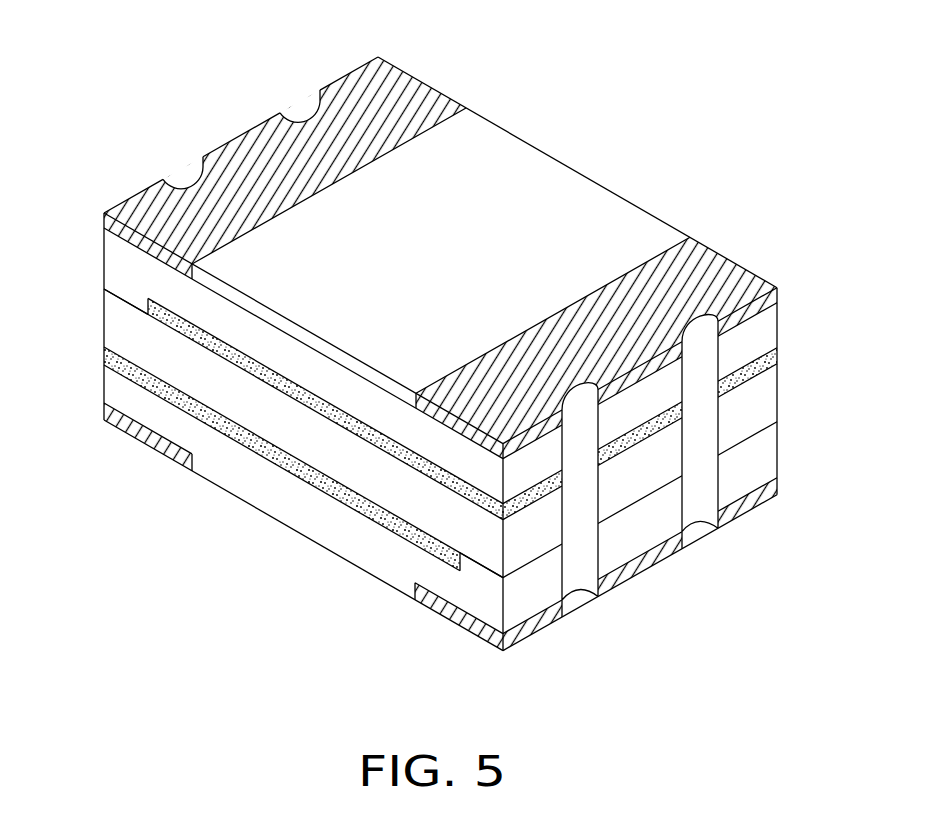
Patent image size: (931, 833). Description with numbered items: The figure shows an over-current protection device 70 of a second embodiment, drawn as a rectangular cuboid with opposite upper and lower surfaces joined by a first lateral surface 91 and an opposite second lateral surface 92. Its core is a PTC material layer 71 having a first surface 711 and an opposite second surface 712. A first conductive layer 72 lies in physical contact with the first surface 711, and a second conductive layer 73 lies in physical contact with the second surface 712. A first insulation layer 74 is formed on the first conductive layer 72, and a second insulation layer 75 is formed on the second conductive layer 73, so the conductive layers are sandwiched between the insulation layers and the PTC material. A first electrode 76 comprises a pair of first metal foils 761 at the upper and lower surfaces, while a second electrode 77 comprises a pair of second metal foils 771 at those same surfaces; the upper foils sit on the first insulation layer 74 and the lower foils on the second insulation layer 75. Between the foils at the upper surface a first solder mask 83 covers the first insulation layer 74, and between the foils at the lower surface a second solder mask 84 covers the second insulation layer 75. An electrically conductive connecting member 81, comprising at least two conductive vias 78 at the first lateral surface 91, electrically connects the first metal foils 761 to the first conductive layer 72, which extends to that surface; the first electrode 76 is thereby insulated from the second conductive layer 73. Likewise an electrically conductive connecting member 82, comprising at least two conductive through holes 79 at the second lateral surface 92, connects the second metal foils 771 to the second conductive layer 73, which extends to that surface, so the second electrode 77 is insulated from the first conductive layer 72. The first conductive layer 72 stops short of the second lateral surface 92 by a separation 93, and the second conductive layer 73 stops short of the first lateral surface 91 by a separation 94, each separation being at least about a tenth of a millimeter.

The over-current protection device 70 is at (703, 92).
The PTC material layer 71 is at (122, 330).
The first conductive layer 72 is at (150, 297).
The second conductive layer 73 is at (112, 355).
The first insulation layer 74 is at (123, 258).
The second insulation layer 75 is at (122, 403).
The first electrode 76 is at (722, 270).
The first metal foils 761 is at (778, 296).
The second electrode 77 is at (408, 88).
The second metal foils 771 is at (128, 240).
The conductive vias 78 is at (692, 510).
The conductive through holes 79 is at (318, 93).
The electrically conductive connecting member 81 is at (744, 585).
The electrically conductive connecting member 82 is at (257, 54).
The first solder mask 83 is at (567, 180).
The second solder mask 84 is at (283, 522).
The first lateral surface 91 is at (767, 398).
The second lateral surface 92 is at (347, 70).
The separation 93 is at (123, 295).
The separation 94 is at (478, 568).
The first surface 711 is at (300, 398).
The second surface 712 is at (372, 508).